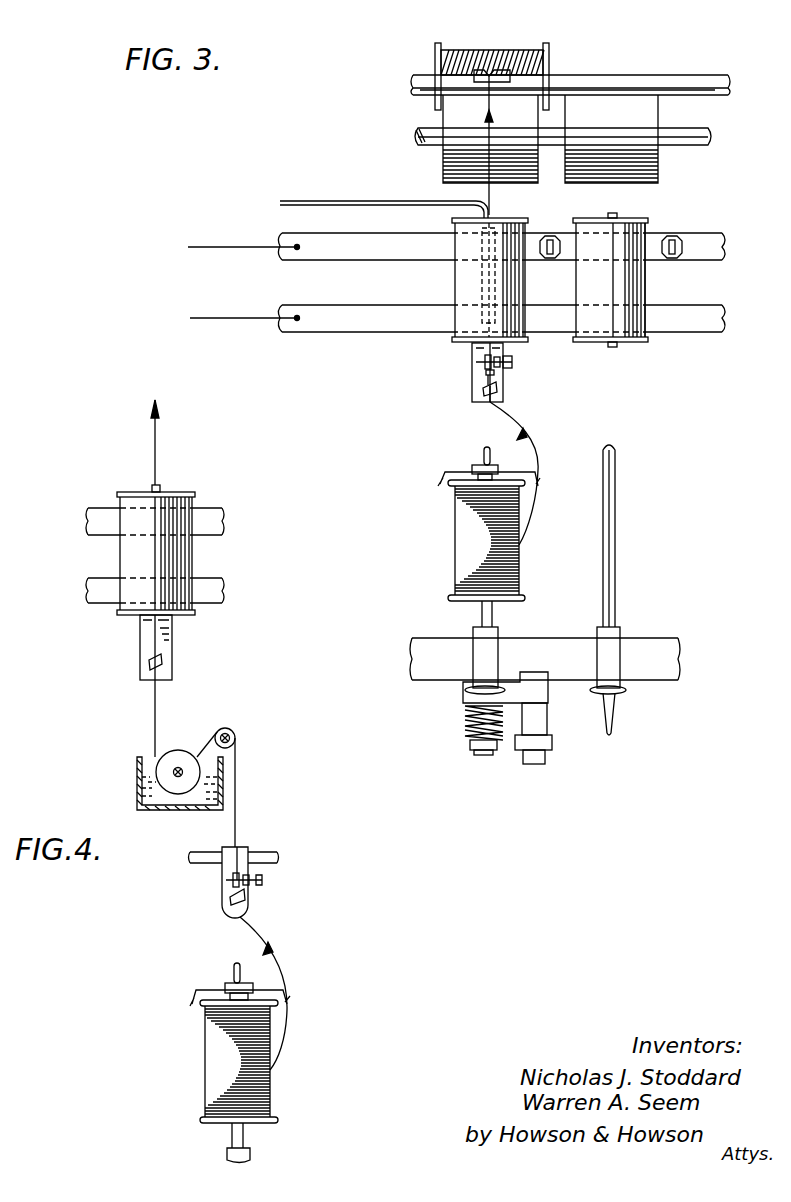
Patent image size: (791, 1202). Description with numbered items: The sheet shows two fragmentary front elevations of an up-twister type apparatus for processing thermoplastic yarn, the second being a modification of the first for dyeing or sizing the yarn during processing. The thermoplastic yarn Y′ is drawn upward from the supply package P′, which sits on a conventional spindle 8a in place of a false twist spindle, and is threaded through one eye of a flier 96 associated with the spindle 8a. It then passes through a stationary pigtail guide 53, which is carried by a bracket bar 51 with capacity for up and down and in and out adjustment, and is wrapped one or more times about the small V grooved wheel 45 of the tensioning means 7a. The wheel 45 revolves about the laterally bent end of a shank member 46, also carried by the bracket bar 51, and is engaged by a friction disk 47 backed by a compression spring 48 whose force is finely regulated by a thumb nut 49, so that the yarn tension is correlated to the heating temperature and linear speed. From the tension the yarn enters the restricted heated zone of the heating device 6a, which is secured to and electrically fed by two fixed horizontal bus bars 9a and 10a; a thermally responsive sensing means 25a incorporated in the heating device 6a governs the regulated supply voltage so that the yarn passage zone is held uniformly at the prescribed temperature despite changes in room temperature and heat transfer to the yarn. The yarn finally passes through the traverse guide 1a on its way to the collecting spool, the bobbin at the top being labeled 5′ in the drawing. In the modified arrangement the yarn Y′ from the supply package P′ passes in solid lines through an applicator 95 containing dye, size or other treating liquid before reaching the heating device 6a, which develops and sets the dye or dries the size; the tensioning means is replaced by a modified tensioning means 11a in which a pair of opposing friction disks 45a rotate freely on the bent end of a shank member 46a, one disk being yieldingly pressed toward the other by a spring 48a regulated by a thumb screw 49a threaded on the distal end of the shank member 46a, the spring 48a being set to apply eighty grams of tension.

In FIG. 3, the traverse guide 1a is at (483, 70).
In FIG. 3, the supply bobbin 5′ is at (550, 50).
In FIG. 3, the heating device 6a is at (525, 288).
In FIG. 4, the heating device 6a is at (130, 555).
In FIG. 3, the tensioning means 7a is at (468, 378).
In FIG. 3, the spindle 8a is at (482, 620).
In FIG. 4, the spindle 8a is at (245, 1145).
In FIG. 3, the bus bar 9a is at (708, 246).
In FIG. 4, the bus bar 9a is at (215, 526).
In FIG. 3, the bus bar 10a is at (716, 332).
In FIG. 4, the bus bar 10a is at (215, 592).
In FIG. 4, the modified tensioning means 11a is at (232, 915).
In FIG. 3, the thermally responsive sensing means 25a is at (482, 287).
In FIG. 3, the V grooved wheel 45 is at (485, 360).
In FIG. 4, the friction disks 45a is at (228, 880).
In FIG. 3, the shank member 46 is at (512, 364).
In FIG. 4, the shank member 46a is at (252, 878).
In FIG. 3, the friction disk 47 is at (492, 378).
In FIG. 3, the compression spring 48 is at (496, 374).
In FIG. 4, the spring 48a is at (246, 890).
In FIG. 3, the thumb nut 49 is at (500, 368).
In FIG. 4, the thumb screw 49a is at (252, 885).
In FIG. 3, the bracket bar 51 is at (482, 402).
In FIG. 3, the pigtail guide 53 is at (486, 386).
In FIG. 4, the applicator 95 is at (137, 778).
In FIG. 3, the flier 96 is at (441, 480).
In FIG. 4, the flier 96 is at (192, 1000).
In FIG. 3, the supply package P′ is at (519, 556).
In FIG. 4, the supply package P′ is at (210, 1086).
In FIG. 3, the thermoplastic yarn Y′ is at (532, 438).
In FIG. 4, the thermoplastic yarn Y′ is at (283, 972).